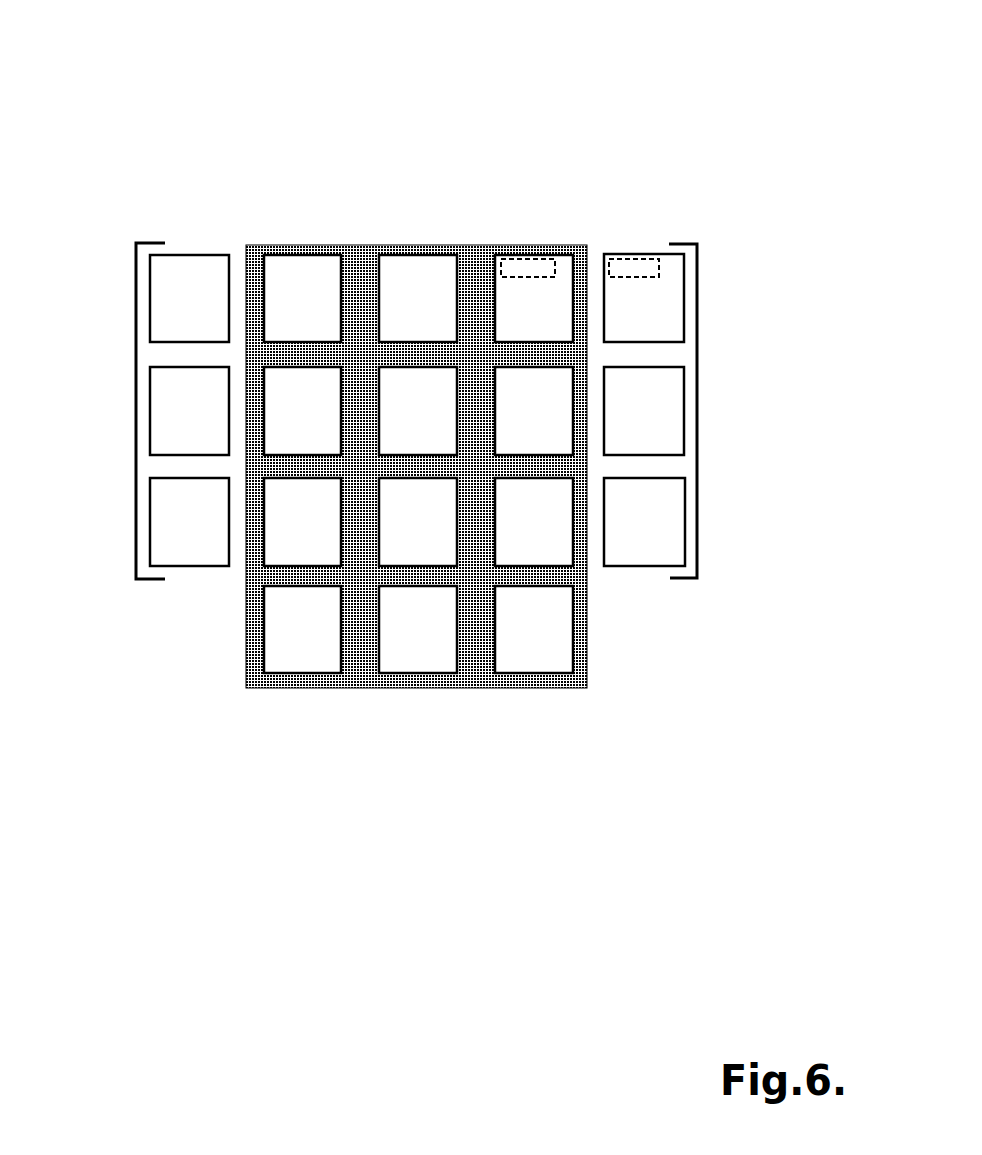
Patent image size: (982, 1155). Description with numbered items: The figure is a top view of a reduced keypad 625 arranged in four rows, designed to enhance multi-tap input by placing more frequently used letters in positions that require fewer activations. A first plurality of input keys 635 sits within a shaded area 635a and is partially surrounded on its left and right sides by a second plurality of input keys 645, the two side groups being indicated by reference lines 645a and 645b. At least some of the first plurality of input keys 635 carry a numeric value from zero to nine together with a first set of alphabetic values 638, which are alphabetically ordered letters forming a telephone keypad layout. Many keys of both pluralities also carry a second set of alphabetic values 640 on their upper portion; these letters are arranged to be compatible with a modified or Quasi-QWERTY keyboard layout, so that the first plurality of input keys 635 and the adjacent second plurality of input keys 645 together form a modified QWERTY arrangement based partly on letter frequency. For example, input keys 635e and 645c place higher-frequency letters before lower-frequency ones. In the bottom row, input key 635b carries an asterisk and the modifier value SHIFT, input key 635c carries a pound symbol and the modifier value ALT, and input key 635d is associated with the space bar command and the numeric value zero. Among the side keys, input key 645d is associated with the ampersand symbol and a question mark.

The reduced keypad 625 is at (760, 20).
The first plurality of input keys 635 is at (305, 268).
The shaded area 635a is at (357, 258).
The input key 635b is at (275, 654).
The input key 635c is at (557, 648).
The input key 635d is at (405, 660).
The input key 635e is at (428, 388).
The first set of alphabetic values 638 is at (530, 336).
The second set of alphabetic values 640 is at (557, 262).
The second plurality of input keys 645 is at (210, 272).
The reference line 645a is at (136, 413).
The reference line 645b is at (697, 400).
The input key 645c is at (183, 539).
The input key 645d is at (640, 540).